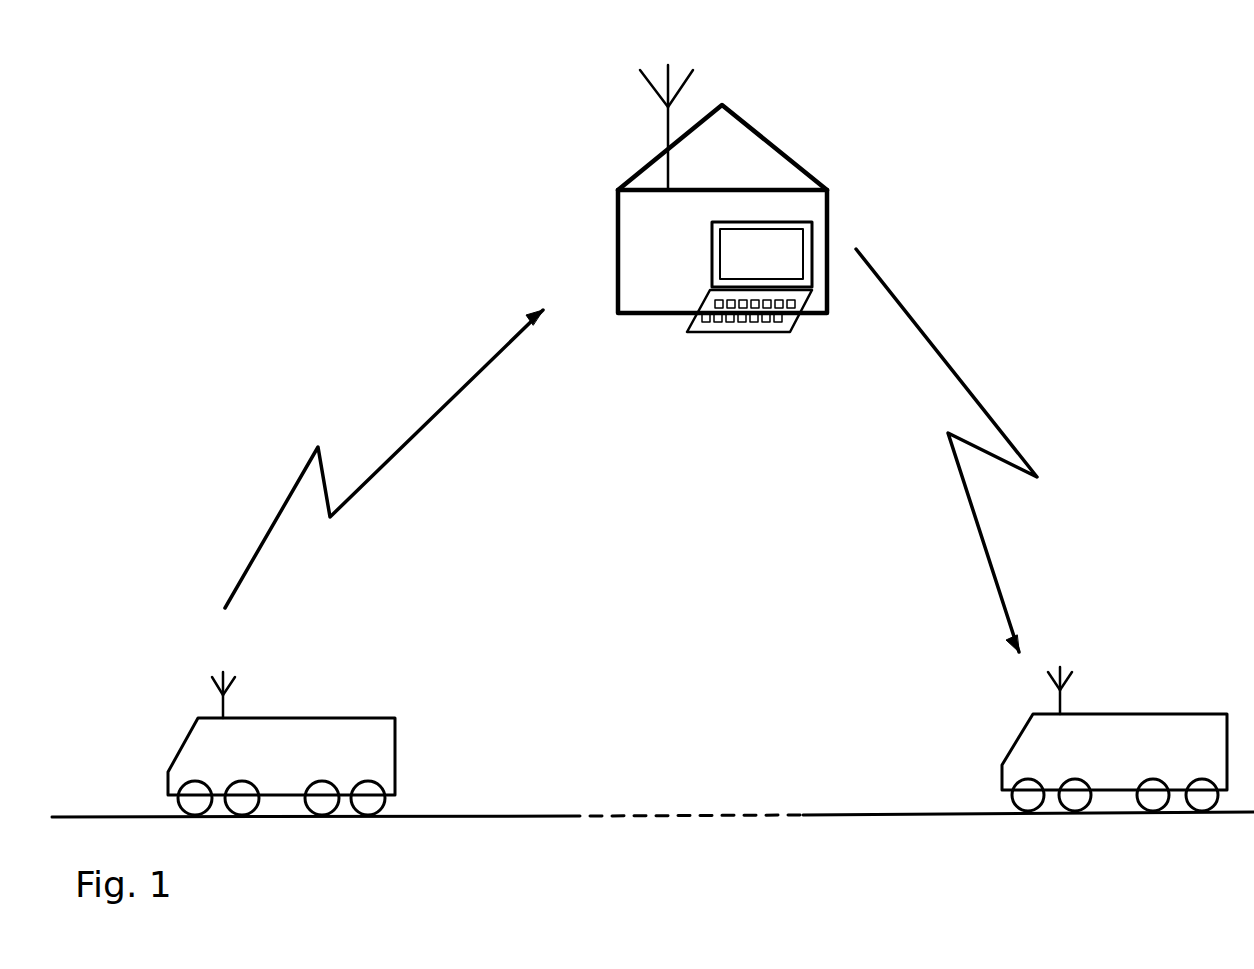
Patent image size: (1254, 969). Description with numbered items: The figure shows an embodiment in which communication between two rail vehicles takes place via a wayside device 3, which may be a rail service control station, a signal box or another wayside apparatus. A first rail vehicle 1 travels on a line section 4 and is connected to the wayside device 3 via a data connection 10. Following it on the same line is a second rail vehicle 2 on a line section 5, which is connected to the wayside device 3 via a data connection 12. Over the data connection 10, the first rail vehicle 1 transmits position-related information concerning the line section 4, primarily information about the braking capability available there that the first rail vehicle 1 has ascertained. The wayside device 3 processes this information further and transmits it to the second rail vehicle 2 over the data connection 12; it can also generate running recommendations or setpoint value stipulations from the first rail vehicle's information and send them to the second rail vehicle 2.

The first rail vehicle 1 is at (297, 776).
The second rail vehicle 2 is at (1135, 773).
The wayside device 3 is at (670, 280).
The line section 4 is at (485, 817).
The line section 5 is at (967, 815).
The data connection 10 is at (427, 420).
The data connection 12 is at (977, 403).